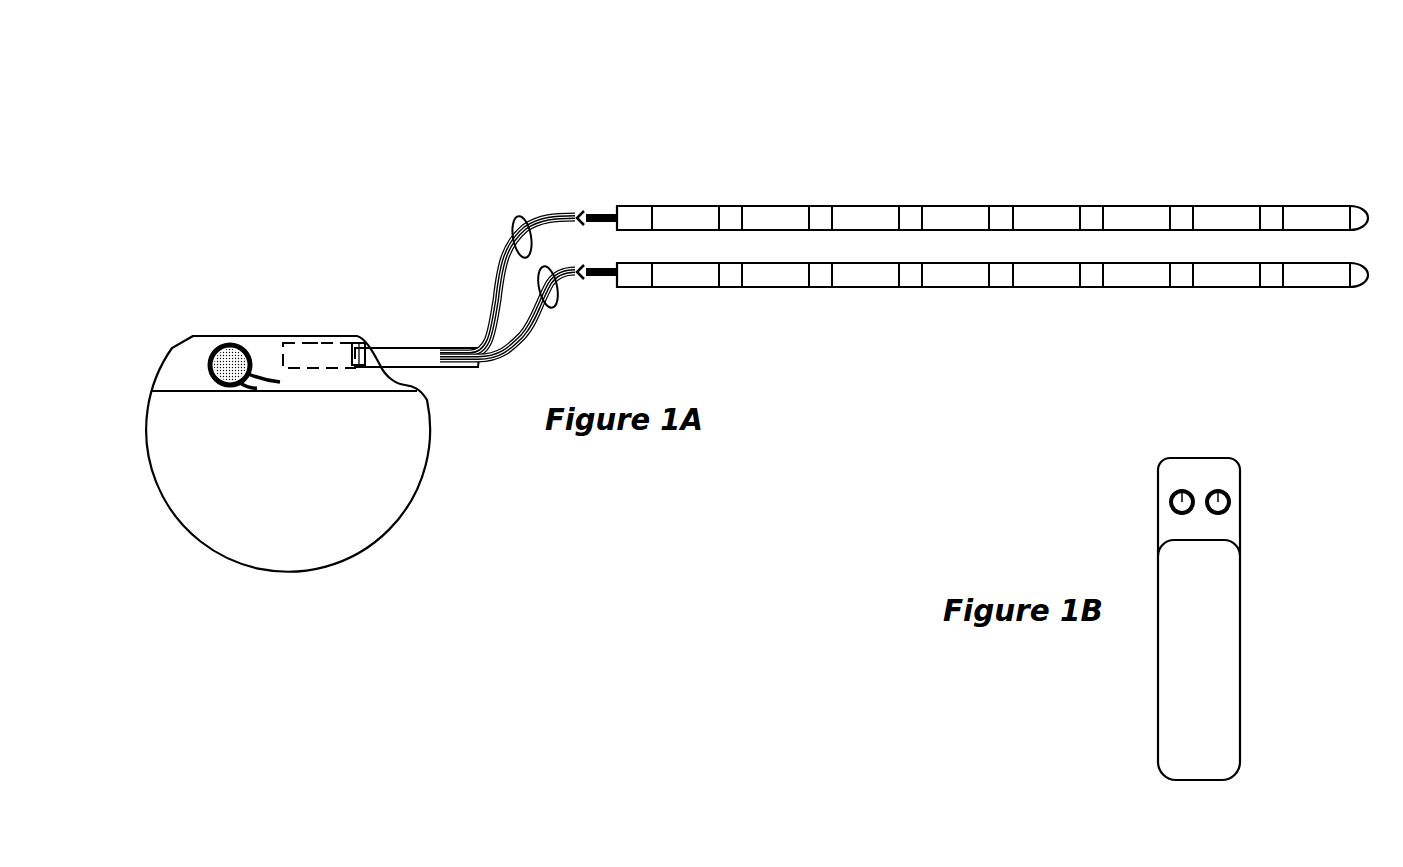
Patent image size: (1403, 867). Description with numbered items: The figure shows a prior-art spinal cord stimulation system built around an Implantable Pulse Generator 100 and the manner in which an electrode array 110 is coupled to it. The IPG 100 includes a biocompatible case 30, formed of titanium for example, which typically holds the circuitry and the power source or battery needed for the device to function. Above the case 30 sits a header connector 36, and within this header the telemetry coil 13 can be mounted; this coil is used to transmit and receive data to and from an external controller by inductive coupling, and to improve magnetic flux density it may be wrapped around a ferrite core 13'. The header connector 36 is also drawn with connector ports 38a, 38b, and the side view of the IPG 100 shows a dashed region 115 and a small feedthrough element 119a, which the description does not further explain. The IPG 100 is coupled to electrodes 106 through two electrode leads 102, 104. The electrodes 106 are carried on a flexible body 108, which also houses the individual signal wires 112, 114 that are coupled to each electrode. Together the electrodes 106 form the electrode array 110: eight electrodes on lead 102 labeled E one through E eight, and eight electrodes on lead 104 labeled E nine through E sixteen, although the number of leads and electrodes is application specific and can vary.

In FIG. 1A, the Implantable Pulse Generator 100 is at (248, 246).
In FIG. 1B, the Implantable Pulse Generator 100 is at (1197, 437).
In FIG. 1A, the case 30 is at (432, 450).
In FIG. 1B, the case 30 is at (1240, 573).
In FIG. 1A, the header connector 36 is at (177, 347).
In FIG. 1B, the header connector 36 is at (1240, 515).
In FIG. 1A, the connector port 38a is at (312, 343).
In FIG. 1B, the connector port 38a is at (1180, 491).
In FIG. 1B, the connector port 38b is at (1220, 491).
In FIG. 1A, the telemetry coil 13 is at (214, 381).
In FIG. 1A, the ferrite core 13' is at (233, 348).
In FIG. 1A, the circuitry 115 is at (341, 309).
In FIG. 1A, the feedthrough 119a is at (357, 342).
In FIG. 1A, the electrode lead 102 is at (668, 186).
In FIG. 1A, the electrode lead 104 is at (710, 314).
In FIG. 1A, the electrodes 106 is at (865, 206).
In FIG. 1A, the flexible body 108 is at (730, 206).
In FIG. 1A, the electrode array 110 is at (1112, 116).
In FIG. 1A, the signal wires 112 is at (515, 222).
In FIG. 1A, the signal wires 114 is at (562, 297).